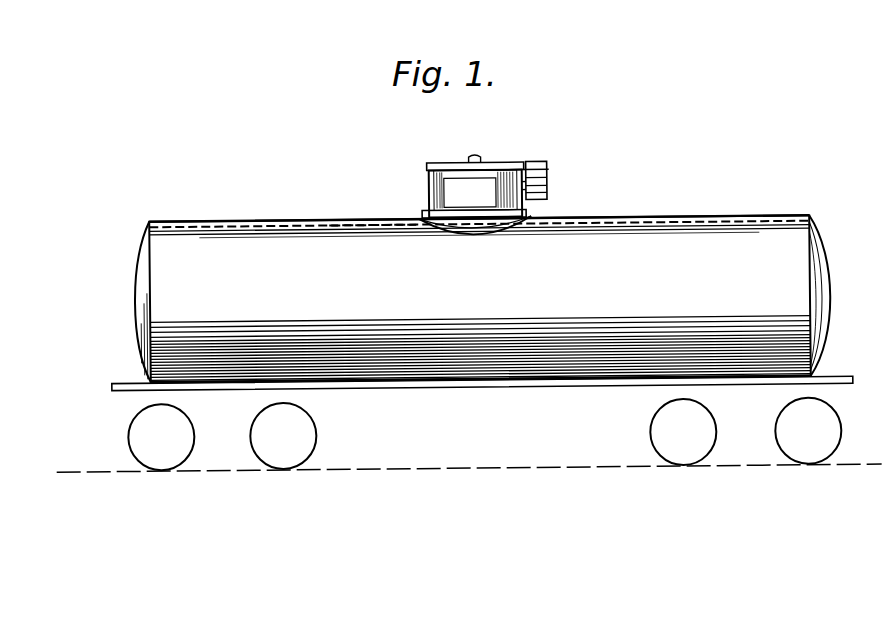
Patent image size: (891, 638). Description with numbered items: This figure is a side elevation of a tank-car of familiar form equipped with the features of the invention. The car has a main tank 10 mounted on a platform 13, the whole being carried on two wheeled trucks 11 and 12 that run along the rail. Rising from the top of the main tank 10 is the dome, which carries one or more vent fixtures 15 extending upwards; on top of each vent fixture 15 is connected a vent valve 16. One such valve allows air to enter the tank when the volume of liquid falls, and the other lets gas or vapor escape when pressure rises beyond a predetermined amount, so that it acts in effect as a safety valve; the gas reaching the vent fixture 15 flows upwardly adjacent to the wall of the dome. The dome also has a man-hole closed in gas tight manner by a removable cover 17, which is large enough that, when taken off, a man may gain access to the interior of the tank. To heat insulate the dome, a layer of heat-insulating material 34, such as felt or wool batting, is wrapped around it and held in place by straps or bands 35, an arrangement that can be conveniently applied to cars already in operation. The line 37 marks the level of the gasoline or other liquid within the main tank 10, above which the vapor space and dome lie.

The main tank 10 is at (487, 289).
The truck 11 is at (232, 446).
The truck 12 is at (753, 440).
The platform 13 is at (126, 380).
The vent fixture 15 is at (532, 187).
The vent valve 16 is at (551, 162).
The cover 17 is at (491, 161).
The layer of heat-insulating material 34 is at (528, 201).
The straps or bands 35 is at (447, 202).
The line 37 is at (369, 228).